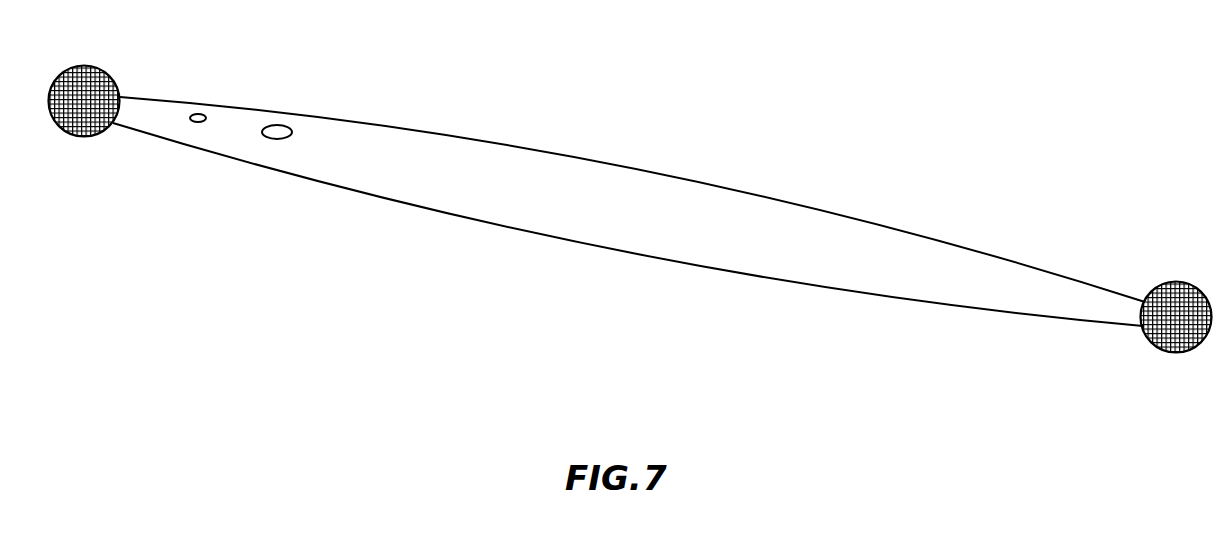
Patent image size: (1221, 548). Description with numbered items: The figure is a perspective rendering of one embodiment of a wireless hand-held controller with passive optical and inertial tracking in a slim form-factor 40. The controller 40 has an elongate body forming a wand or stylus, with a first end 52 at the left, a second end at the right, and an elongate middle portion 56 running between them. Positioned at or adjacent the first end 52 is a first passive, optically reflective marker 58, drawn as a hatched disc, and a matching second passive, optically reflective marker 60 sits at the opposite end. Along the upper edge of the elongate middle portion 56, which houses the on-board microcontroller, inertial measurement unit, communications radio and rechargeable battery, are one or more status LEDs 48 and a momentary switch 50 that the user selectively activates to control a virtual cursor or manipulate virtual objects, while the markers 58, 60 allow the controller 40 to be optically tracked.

The wireless hand-held controller 40 is at (583, 130).
The status LED 48 is at (198, 113).
The momentary switch 50 is at (278, 125).
The first end 52 is at (109, 155).
The elongate middle portion 56 is at (460, 259).
The first passive, optically reflective marker 58 is at (90, 67).
The second passive, optically reflective marker 60 is at (1180, 282).